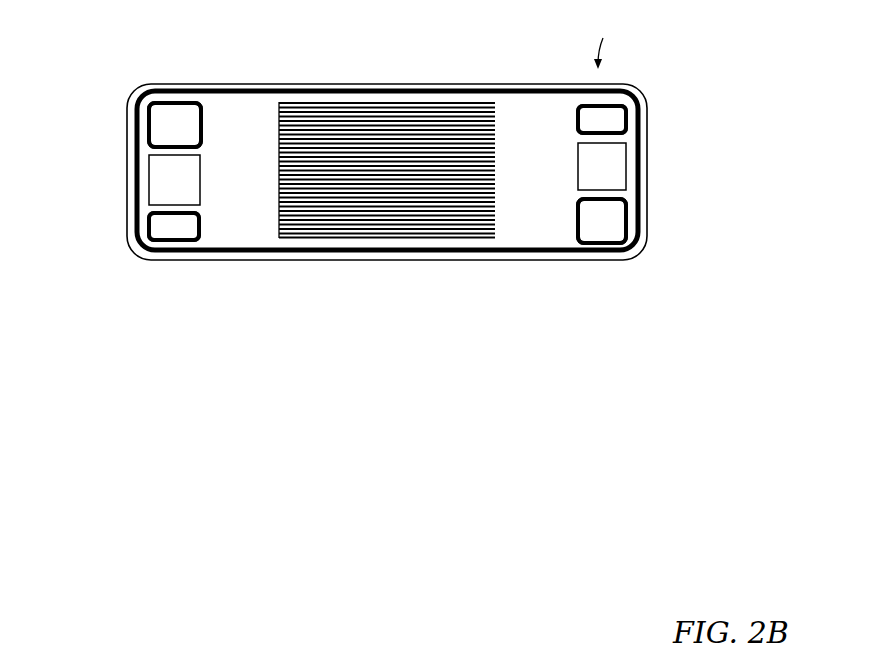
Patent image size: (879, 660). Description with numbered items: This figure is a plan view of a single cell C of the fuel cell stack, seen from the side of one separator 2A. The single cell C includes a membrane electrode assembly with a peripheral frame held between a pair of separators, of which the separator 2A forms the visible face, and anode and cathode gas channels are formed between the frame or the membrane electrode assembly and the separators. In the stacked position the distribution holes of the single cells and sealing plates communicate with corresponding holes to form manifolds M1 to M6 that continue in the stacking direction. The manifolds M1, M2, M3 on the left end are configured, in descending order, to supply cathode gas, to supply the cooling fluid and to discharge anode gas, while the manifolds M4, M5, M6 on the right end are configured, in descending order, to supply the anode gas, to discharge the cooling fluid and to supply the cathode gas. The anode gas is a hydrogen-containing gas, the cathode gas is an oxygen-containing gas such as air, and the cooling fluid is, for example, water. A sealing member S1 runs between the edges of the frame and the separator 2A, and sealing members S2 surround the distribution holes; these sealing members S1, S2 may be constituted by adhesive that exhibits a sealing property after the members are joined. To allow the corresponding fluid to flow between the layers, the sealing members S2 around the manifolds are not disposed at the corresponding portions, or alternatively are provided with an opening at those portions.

The separator 2A is at (508, 85).
The sealing member S1 is at (272, 85).
The sealing member S2 is at (200, 212).
The single cell C is at (610, 31).
The manifold M1 is at (163, 122).
The manifold M2 is at (160, 181).
The manifold M3 is at (163, 228).
The manifold M4 is at (613, 118).
The manifold M5 is at (613, 167).
The manifold M6 is at (613, 222).